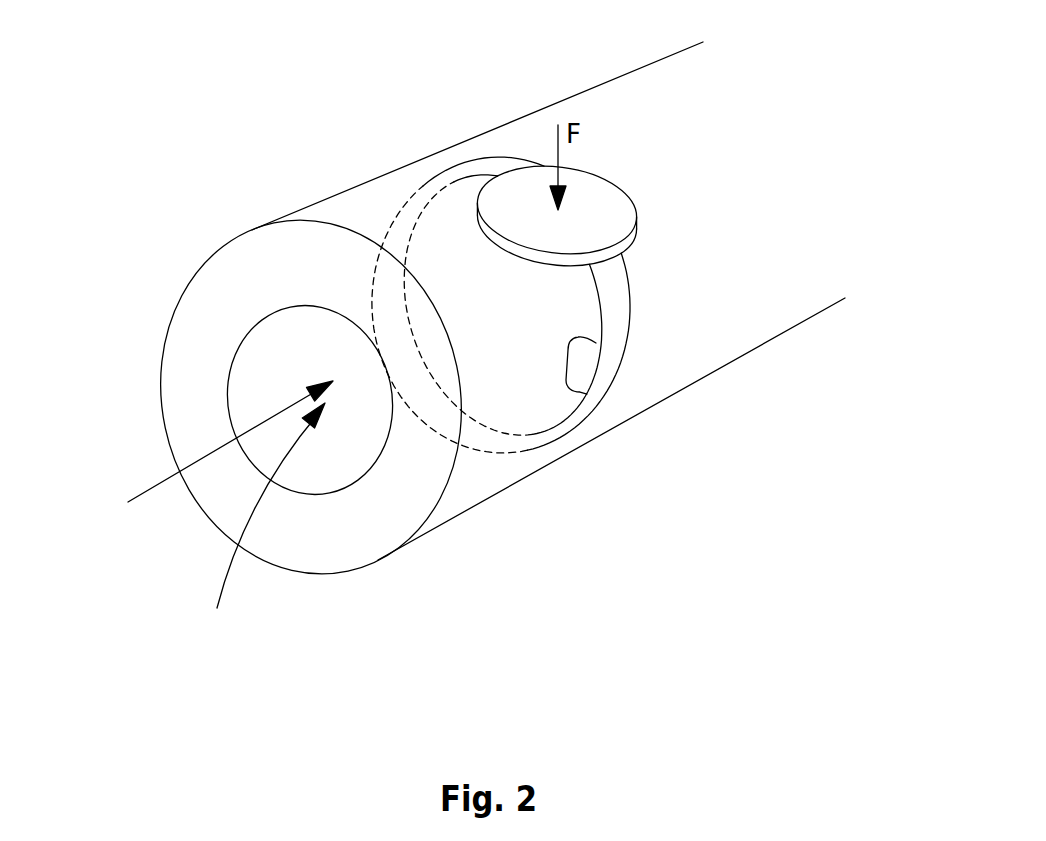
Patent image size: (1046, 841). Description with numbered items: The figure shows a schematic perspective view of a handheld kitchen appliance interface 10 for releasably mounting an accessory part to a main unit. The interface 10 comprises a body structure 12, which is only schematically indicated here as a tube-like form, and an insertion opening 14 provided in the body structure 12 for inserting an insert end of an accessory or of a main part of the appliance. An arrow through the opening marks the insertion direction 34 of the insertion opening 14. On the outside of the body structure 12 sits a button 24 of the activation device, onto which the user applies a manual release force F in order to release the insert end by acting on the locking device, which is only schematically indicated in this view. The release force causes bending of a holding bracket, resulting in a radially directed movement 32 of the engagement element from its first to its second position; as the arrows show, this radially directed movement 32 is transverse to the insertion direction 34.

The handheld kitchen appliance interface 10 is at (379, 130).
The body structure 12 is at (231, 280).
The insertion opening 14 is at (263, 524).
The button 24 is at (628, 185).
The radially directed movement 32 is at (375, 258).
The insertion direction 34 is at (165, 478).